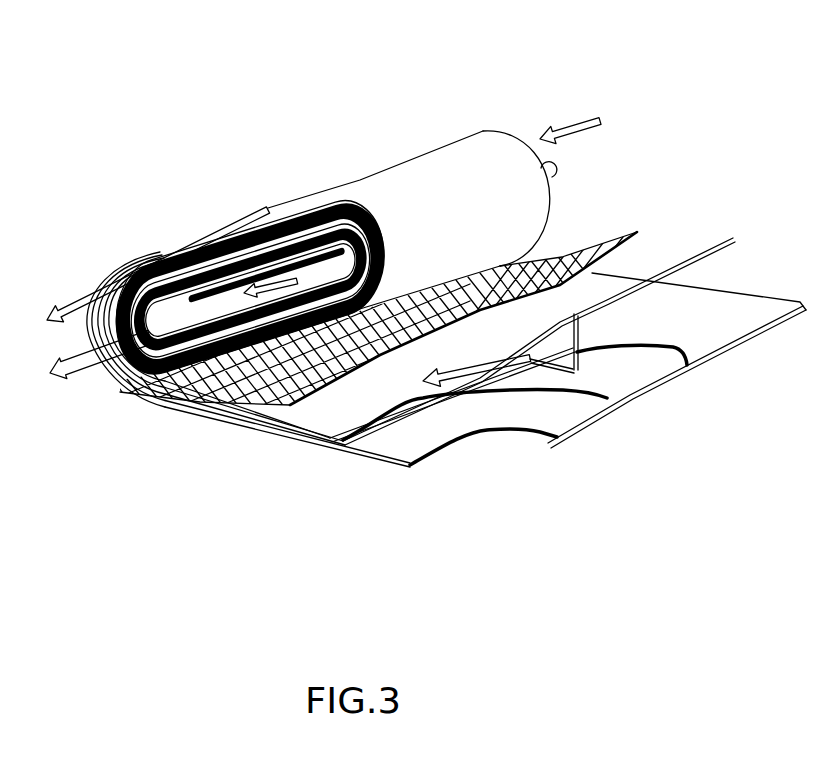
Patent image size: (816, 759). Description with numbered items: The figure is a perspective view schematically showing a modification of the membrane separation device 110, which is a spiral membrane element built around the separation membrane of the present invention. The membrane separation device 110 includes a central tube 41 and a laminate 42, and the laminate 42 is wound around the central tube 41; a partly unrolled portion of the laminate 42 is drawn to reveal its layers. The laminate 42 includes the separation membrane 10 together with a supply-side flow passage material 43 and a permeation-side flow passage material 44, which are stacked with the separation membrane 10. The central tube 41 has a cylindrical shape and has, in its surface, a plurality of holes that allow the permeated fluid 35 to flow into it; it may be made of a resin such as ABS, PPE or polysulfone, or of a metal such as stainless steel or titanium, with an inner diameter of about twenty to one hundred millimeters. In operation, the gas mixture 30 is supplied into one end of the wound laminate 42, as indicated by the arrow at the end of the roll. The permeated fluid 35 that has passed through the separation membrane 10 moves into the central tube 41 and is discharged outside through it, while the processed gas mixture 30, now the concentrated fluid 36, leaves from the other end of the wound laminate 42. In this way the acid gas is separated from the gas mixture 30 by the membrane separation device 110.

The membrane separation device 110 is at (89, 101).
The gas mixture 30 is at (664, 268).
The central tube 41 is at (85, 374).
The laminate 42 is at (241, 434).
The supply-side flow passage material 43 is at (612, 254).
The separation membrane 10 is at (375, 397).
The permeation-side flow passage material 44 is at (617, 378).
The permeated fluid 35 is at (63, 383).
The concentrated fluid 36 is at (57, 302).